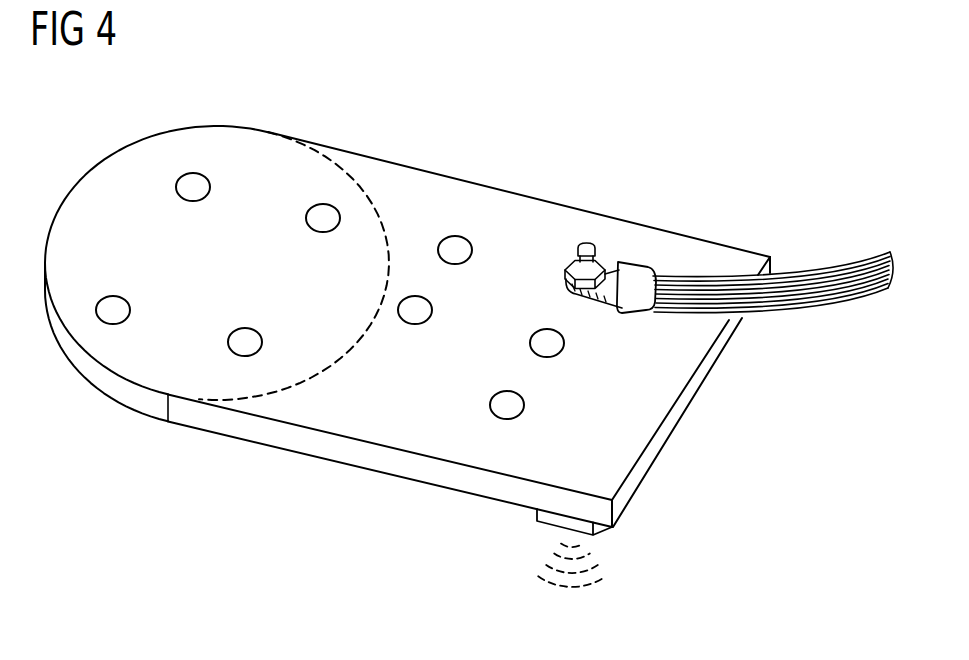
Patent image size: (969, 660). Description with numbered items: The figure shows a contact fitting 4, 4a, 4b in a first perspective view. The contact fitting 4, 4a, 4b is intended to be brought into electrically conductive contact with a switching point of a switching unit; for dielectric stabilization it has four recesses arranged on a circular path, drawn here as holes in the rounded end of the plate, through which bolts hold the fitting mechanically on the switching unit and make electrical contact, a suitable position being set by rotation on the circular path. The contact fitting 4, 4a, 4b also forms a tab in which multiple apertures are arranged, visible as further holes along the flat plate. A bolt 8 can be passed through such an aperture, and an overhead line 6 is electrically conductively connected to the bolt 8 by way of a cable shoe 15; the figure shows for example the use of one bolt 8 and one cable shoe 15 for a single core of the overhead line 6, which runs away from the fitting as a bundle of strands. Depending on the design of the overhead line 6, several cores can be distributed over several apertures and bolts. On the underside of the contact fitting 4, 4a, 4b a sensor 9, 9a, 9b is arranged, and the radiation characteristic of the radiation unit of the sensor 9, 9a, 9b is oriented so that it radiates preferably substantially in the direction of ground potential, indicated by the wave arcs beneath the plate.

The contact fitting 4 is at (407, 326).
The contact fitting 4a is at (407, 313).
The contact fitting 4b is at (317, 443).
The overhead line 6 is at (822, 268).
The bolt 8 is at (585, 243).
The sensor 9 is at (515, 548).
The sensor 9a is at (574, 522).
The sensor 9b is at (572, 565).
The cable shoe 15 is at (637, 268).